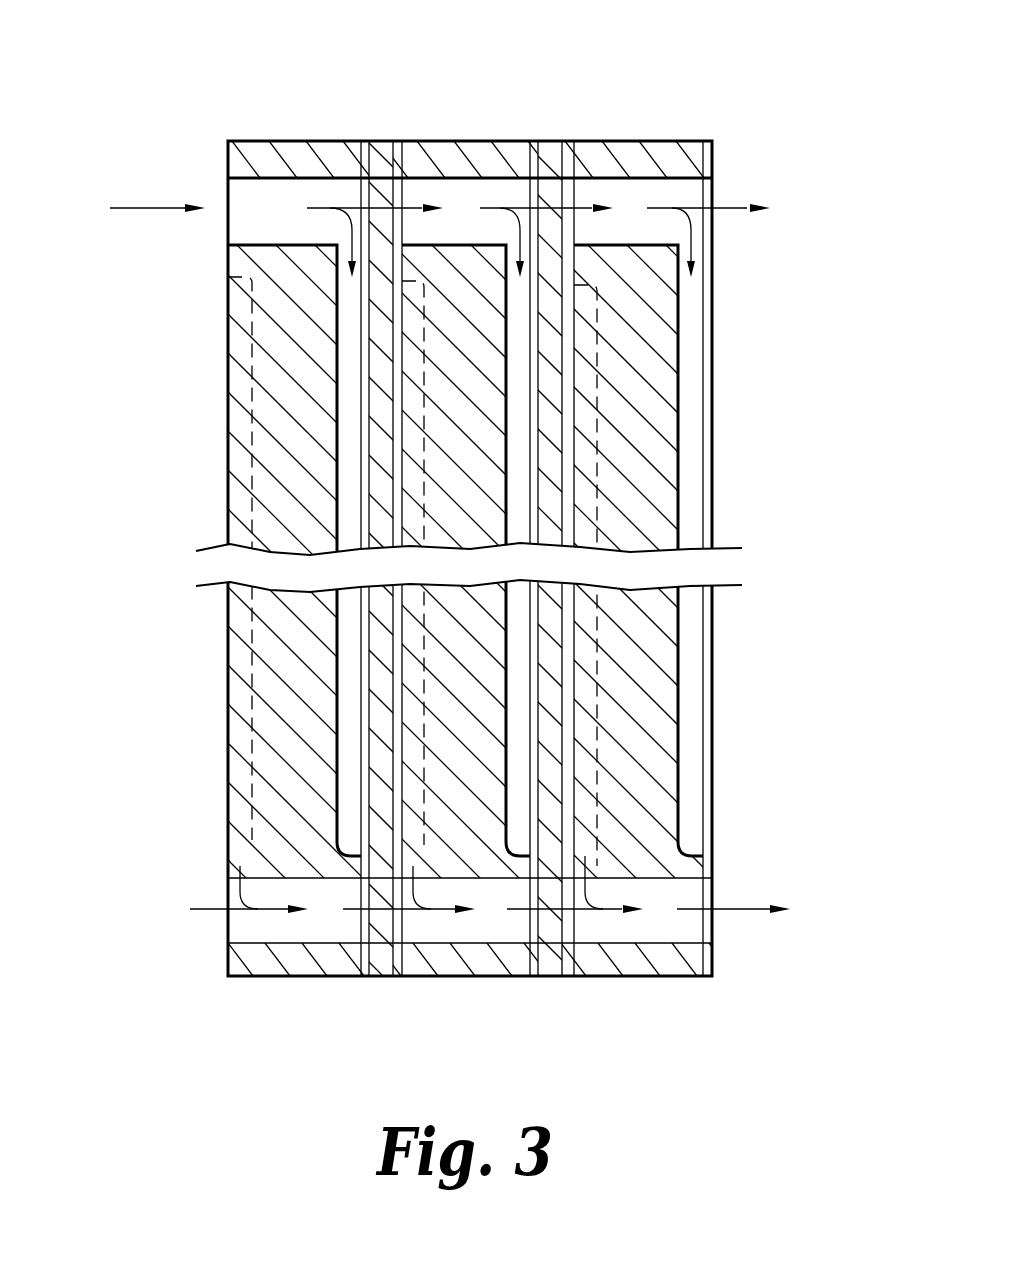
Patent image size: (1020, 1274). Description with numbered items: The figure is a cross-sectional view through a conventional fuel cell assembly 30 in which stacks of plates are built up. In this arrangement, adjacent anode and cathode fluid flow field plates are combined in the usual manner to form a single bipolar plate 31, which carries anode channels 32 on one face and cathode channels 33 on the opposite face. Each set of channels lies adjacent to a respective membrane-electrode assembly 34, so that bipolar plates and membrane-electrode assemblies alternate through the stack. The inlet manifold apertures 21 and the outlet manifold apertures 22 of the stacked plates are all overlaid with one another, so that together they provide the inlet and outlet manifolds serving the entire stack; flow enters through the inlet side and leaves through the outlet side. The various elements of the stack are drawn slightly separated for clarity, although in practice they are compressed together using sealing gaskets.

The fuel cell assembly 30 is at (232, 110).
The bipolar plate 31 is at (303, 160).
The anode channels 32 is at (350, 483).
The cathode channels 33 is at (585, 507).
The membrane-electrode assembly 34 is at (381, 158).
The inlet manifold apertures 21 is at (409, 222).
The outlet manifold apertures 22 is at (535, 891).